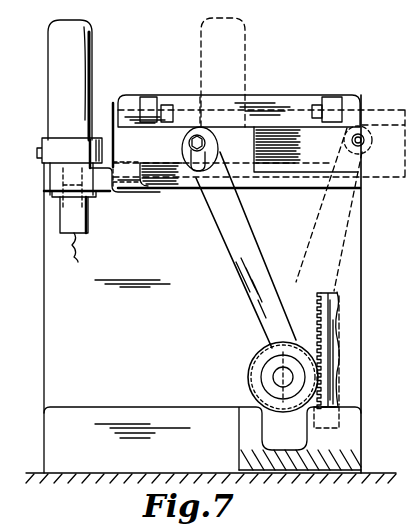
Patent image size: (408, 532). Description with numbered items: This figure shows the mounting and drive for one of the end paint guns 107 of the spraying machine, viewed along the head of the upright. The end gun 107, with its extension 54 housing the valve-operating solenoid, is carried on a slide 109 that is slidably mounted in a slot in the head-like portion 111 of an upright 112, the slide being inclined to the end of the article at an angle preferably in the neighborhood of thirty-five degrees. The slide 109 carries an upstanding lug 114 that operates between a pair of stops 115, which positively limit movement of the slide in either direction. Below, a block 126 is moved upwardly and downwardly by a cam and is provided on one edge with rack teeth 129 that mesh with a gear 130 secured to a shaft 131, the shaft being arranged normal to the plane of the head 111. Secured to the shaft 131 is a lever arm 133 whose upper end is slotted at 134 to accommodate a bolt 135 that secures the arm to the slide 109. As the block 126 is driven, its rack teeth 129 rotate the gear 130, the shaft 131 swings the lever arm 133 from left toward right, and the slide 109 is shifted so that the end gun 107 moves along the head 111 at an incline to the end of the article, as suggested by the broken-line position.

The extension 54 is at (66, 226).
The end gun 107 is at (76, 66).
The slide 109 is at (103, 182).
The head-like portion 111 is at (300, 100).
The upright 112 is at (349, 260).
The upstanding lug 114 is at (167, 105).
The stops 115 is at (147, 97).
The block 126 is at (331, 343).
The rack teeth 129 is at (319, 296).
The gear 130 is at (252, 370).
The shaft 131 is at (277, 378).
The lever arm 133 is at (231, 268).
The slot 134 is at (197, 172).
The bolt 135 is at (190, 150).